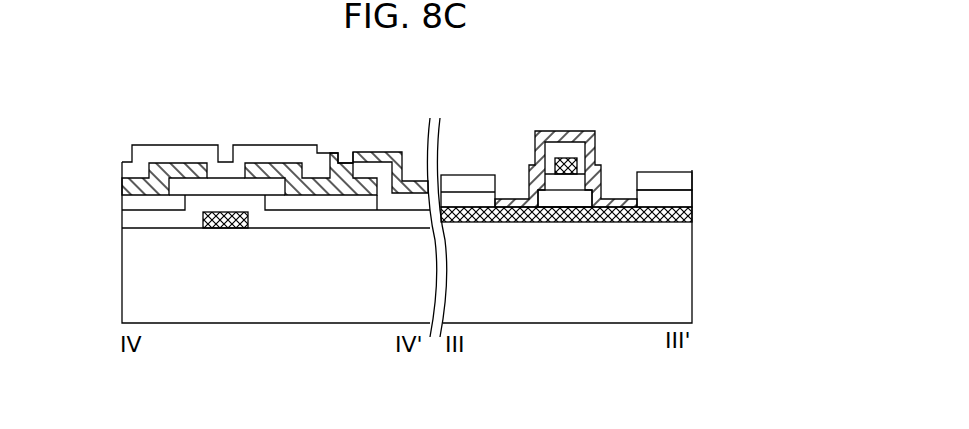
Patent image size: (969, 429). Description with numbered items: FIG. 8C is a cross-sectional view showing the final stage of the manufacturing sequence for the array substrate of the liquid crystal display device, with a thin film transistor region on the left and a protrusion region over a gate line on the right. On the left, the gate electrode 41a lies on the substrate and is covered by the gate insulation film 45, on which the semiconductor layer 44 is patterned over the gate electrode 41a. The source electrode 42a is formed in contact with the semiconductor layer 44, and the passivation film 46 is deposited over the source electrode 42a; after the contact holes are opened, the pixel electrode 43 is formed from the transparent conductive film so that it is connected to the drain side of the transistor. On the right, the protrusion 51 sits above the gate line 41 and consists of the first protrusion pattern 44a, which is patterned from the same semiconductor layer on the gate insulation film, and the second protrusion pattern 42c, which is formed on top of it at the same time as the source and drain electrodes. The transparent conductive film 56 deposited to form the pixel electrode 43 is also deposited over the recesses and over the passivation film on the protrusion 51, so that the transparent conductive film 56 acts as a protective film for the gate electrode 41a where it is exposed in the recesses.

The passivation film 46 is at (122, 171).
The source electrode 42a is at (122, 190).
The semiconductor layer 44 is at (122, 206).
The gate insulation film 45 is at (122, 220).
The gate electrode 41a is at (222, 228).
The pixel electrode 43 is at (383, 152).
The gate line 41 is at (692, 213).
The transparent conductive film 56 is at (568, 131).
The second protrusion pattern 42c is at (555, 174).
The first protrusion pattern 44a is at (563, 182).
The protrusion 51 is at (569, 280).